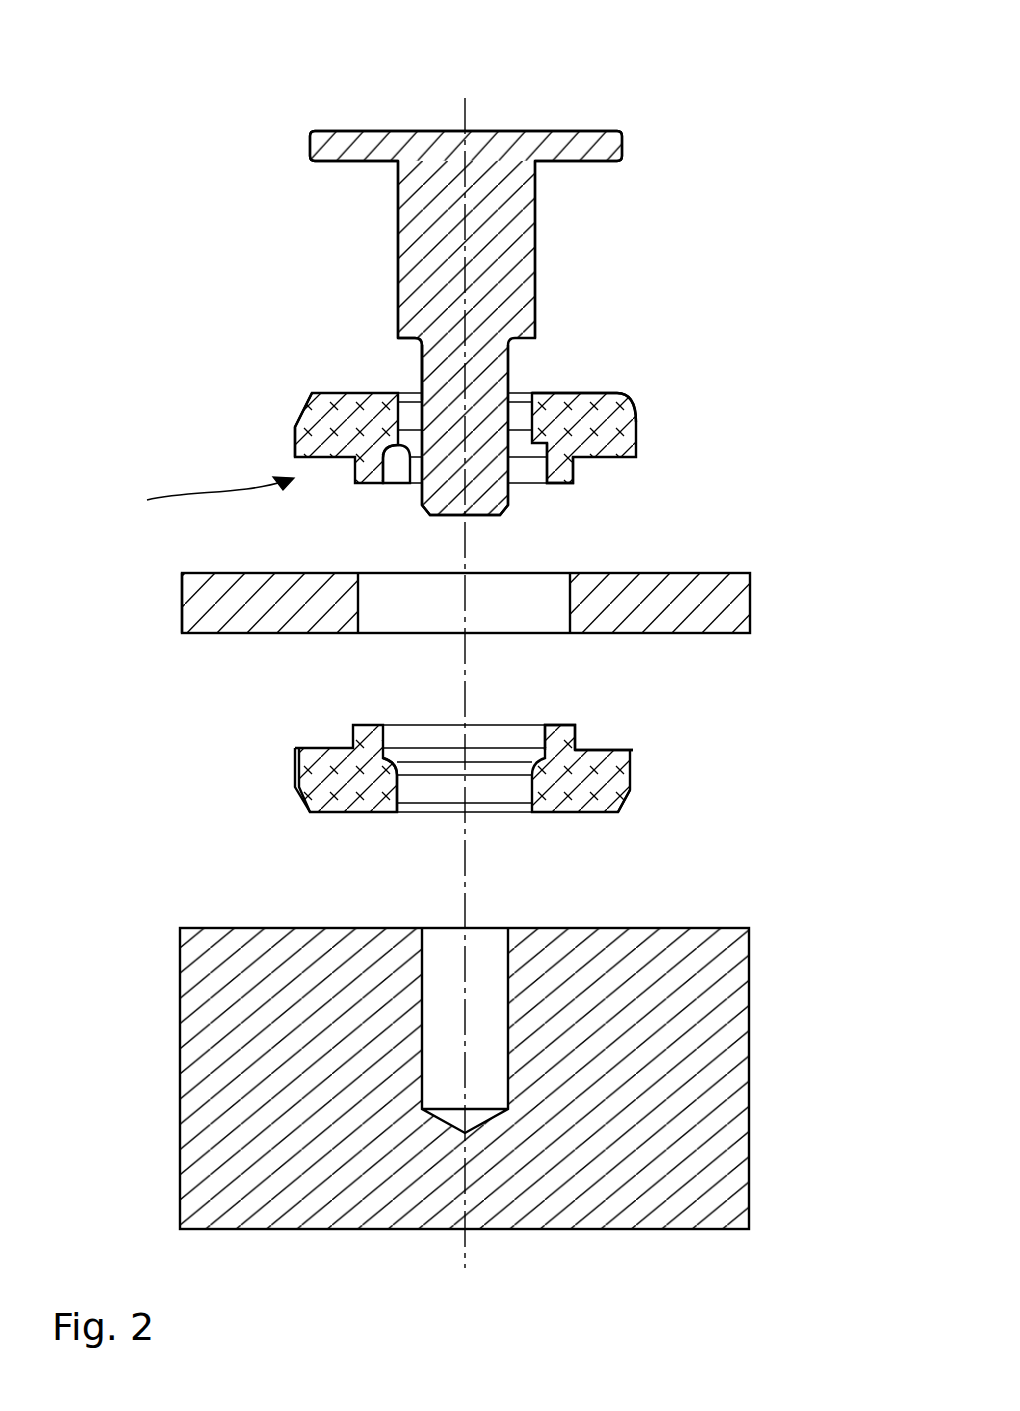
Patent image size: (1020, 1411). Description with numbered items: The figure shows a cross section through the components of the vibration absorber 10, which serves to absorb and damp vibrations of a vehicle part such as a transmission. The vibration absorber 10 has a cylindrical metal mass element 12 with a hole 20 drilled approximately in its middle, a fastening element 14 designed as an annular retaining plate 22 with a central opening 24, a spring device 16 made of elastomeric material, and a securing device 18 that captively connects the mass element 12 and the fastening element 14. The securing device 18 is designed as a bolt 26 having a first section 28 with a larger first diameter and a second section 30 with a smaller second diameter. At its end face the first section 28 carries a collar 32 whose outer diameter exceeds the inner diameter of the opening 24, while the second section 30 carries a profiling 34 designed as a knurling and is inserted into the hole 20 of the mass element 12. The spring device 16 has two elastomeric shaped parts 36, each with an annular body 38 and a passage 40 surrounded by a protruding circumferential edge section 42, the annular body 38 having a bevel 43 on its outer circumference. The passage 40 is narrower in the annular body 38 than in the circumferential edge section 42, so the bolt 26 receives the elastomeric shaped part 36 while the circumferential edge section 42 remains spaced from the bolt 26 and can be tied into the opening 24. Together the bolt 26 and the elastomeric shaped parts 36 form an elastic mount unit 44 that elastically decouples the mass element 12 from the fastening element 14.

The vibration absorber 10 is at (712, 127).
The mass element 12 is at (730, 1066).
The fastening element 14 is at (740, 607).
The spring device 16 is at (637, 437).
The securing device 18 is at (528, 196).
The hole 20 is at (507, 1003).
The retaining plate 22 is at (190, 607).
The opening 24 is at (366, 607).
The bolt 26 is at (511, 299).
The first section 28 is at (410, 240).
The second section 30 is at (510, 370).
The collar 32 is at (557, 150).
The profiling 34 is at (420, 385).
The elastomeric shaped part 36 is at (625, 405).
The annular body 38 is at (300, 423).
The passage 40 is at (405, 472).
The circumferential edge section 42 is at (568, 465).
The bevel 43 is at (640, 414).
The elastic mount unit 44 is at (200, 500).